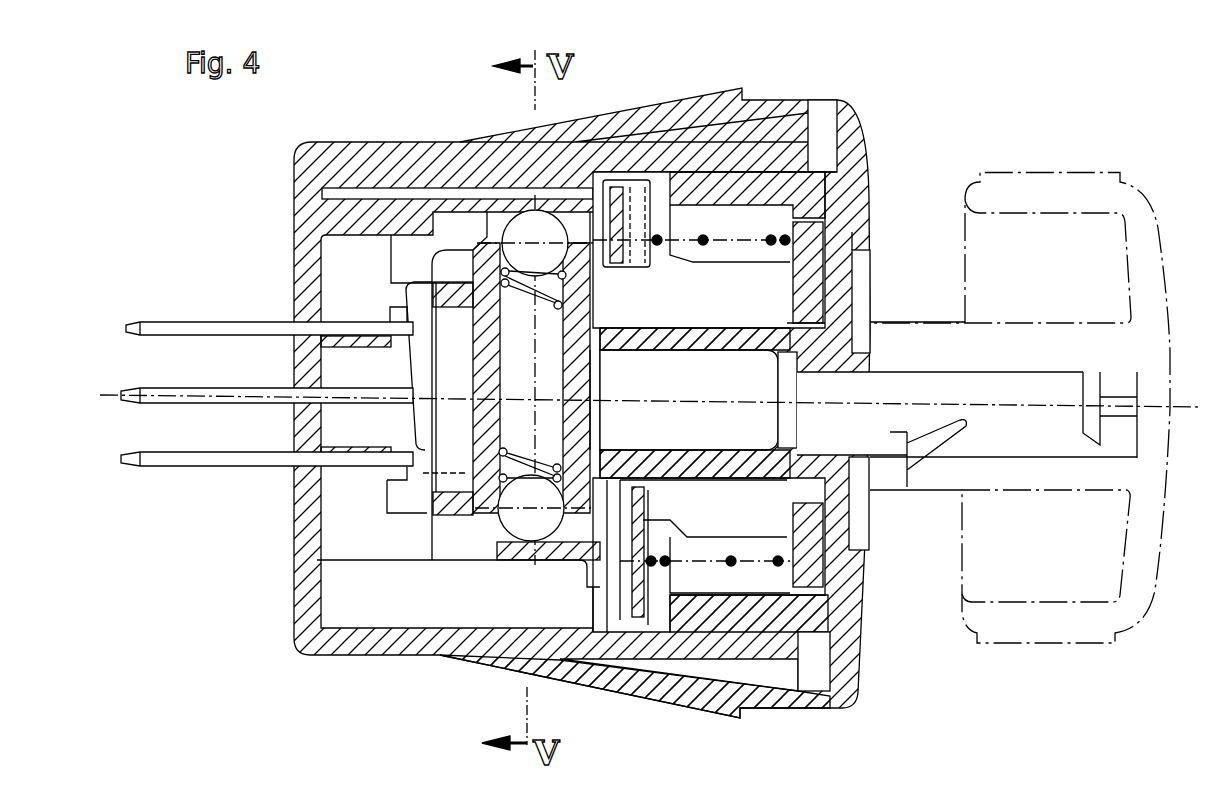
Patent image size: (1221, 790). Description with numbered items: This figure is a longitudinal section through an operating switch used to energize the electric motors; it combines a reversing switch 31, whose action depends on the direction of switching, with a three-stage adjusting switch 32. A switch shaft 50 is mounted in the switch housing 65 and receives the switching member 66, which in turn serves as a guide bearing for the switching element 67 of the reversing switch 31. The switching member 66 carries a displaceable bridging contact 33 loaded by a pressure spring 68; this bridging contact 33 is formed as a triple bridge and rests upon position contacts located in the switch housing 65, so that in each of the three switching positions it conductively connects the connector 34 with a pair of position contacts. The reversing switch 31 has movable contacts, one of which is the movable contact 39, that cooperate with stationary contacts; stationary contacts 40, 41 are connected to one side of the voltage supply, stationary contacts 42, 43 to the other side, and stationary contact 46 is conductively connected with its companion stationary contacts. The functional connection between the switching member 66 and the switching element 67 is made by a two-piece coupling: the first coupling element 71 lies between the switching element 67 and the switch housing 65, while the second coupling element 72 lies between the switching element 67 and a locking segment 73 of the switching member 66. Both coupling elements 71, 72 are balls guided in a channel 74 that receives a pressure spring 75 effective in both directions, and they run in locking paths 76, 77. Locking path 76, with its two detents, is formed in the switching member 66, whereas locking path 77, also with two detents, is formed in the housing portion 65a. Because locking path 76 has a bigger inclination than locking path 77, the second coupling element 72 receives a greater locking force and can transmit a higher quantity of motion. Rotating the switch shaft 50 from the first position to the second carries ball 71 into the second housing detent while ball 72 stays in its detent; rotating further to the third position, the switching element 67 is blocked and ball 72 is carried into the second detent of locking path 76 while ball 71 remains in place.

The reversing switch 31 is at (408, 256).
The three-stage adjusting switch 32 is at (690, 226).
The bridging contact 33 is at (640, 600).
The connector 34 is at (353, 192).
The movable contact 39 is at (420, 362).
The stationary contact 40 is at (232, 460).
The stationary contact 41 is at (267, 478).
The stationary contact 42 is at (269, 298).
The stationary contact 43 is at (210, 330).
The stationary contact 46 is at (225, 397).
The switch shaft 50 is at (845, 400).
The switch housing 65 is at (845, 186).
The housing portion 65a is at (482, 218).
The switching member 66 is at (603, 520).
The switching element 67 is at (447, 508).
The pressure spring 68 is at (780, 237).
The first coupling element 71 is at (517, 233).
The second coupling element 72 is at (520, 562).
The locking segment 73 is at (522, 522).
The channel 74 is at (578, 420).
The pressure spring 75 is at (565, 302).
The locking path 76 is at (570, 530).
The locking path 77 is at (577, 228).